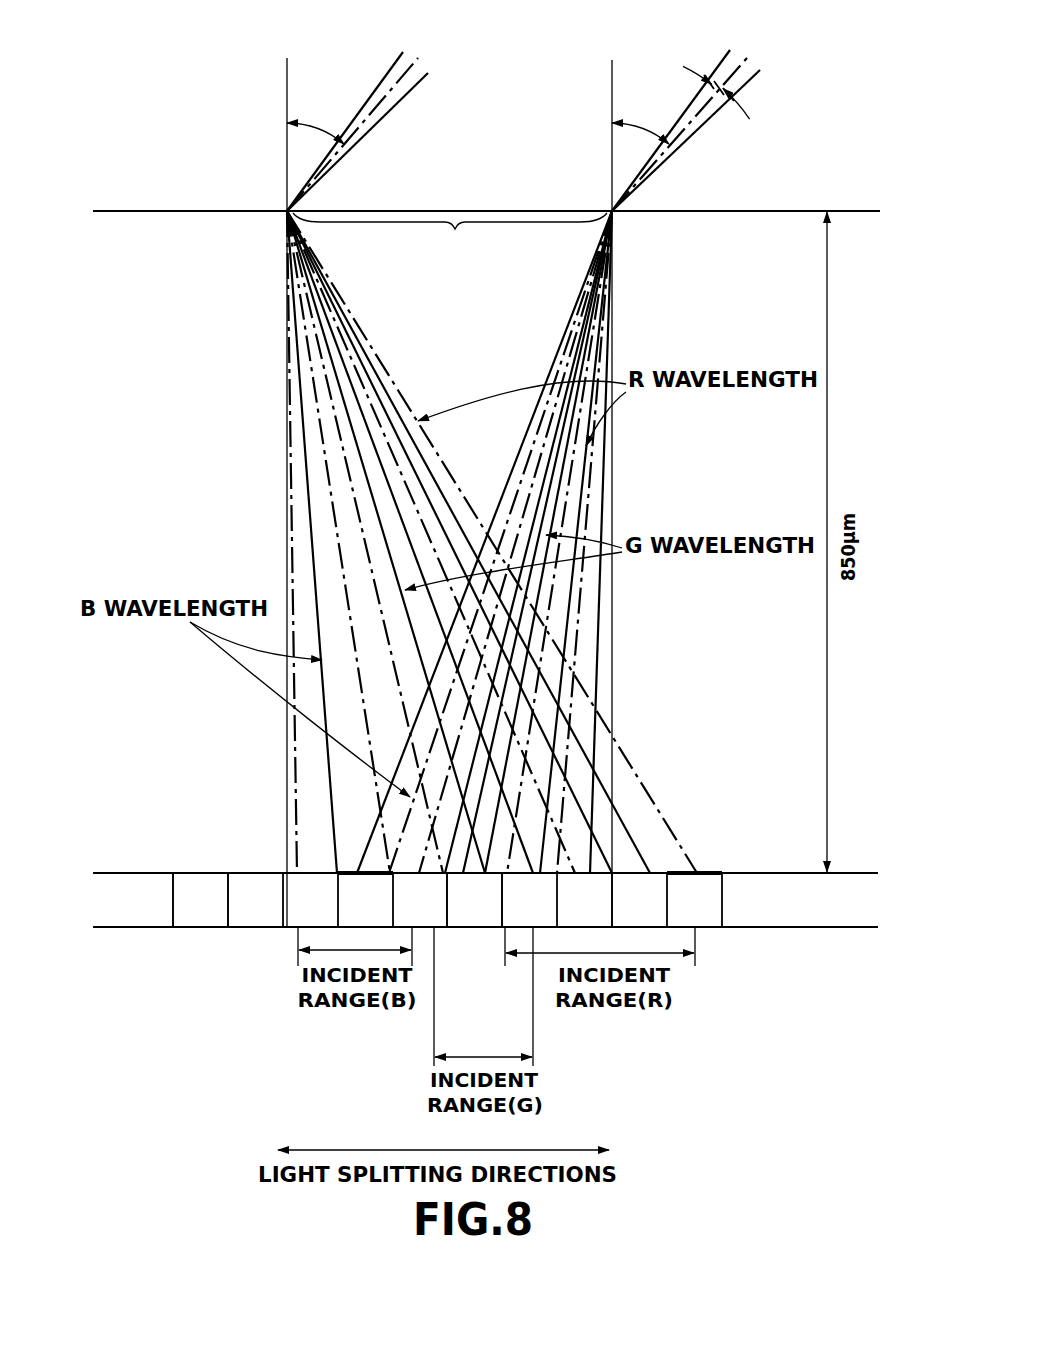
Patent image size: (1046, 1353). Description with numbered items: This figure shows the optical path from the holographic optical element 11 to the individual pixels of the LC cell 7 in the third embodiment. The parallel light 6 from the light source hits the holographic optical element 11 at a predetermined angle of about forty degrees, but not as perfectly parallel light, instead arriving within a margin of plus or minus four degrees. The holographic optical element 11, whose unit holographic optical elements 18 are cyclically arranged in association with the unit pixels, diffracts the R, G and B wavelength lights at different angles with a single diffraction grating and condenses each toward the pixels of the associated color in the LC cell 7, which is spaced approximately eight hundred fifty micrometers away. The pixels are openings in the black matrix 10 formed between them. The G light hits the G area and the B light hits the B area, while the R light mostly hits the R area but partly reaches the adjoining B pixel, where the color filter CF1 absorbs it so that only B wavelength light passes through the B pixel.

The parallel light 6 is at (402, 32).
The holographic optical element 11 is at (150, 214).
The unit holographic optical element 18 is at (450, 236).
The black matrix 10 is at (323, 892).
The color filter CF1 is at (352, 872).
The LC cell 7 is at (130, 930).